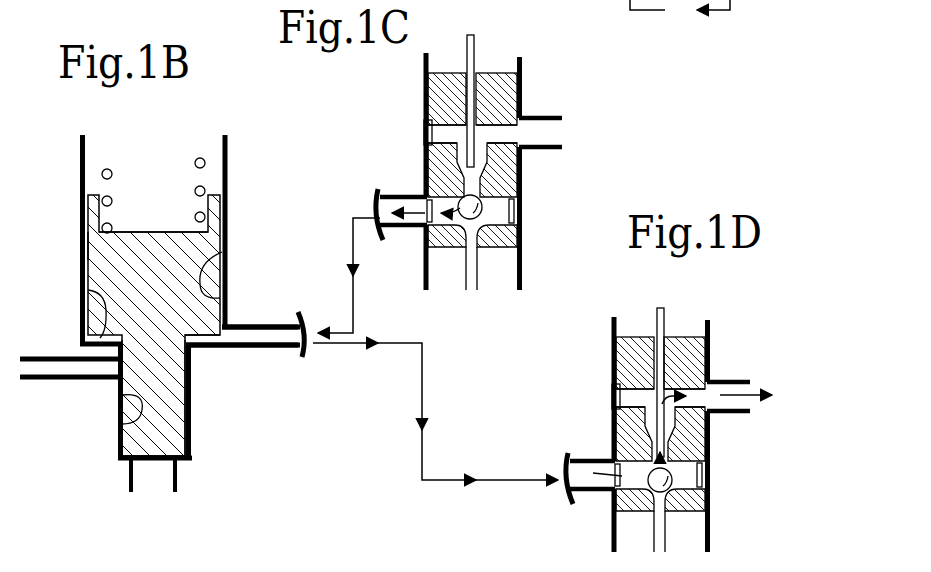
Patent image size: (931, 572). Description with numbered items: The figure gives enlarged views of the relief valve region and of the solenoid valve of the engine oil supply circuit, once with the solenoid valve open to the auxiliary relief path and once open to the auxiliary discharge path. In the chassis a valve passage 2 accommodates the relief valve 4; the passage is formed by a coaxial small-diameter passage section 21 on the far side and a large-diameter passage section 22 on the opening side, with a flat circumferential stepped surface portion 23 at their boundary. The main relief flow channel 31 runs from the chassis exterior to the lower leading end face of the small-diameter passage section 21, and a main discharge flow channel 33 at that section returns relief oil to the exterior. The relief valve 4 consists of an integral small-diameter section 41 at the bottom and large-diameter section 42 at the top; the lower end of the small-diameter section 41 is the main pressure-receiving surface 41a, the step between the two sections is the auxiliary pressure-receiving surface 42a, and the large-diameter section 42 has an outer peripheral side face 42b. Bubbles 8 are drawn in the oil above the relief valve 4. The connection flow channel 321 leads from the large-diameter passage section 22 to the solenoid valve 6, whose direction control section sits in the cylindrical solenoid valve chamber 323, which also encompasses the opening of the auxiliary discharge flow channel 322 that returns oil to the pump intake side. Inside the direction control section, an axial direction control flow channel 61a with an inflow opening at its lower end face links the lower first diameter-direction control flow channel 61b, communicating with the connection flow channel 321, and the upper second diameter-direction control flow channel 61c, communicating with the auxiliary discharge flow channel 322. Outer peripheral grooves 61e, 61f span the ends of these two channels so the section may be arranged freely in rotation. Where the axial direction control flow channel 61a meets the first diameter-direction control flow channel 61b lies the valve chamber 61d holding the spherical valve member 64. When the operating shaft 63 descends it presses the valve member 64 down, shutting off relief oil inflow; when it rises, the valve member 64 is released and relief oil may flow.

In FIG. 1B, the valve passage 2 is at (159, 157).
In FIG. 1B, the relief valve 4 is at (153, 226).
In FIG. 1B, the bubbles 8 is at (200, 157).
In FIG. 1B, the outer peripheral side face 42b is at (88, 248).
In FIG. 1B, the large-diameter section 42 is at (103, 266).
In FIG. 1B, the stepped surface portion 23 is at (90, 292).
In FIG. 1B, the large-diameter passage section 22 is at (222, 250).
In FIG. 1B, the main discharge flow channel 33 is at (65, 358).
In FIG. 1B, the connection flow channel 321 is at (258, 326).
In FIG. 1C, the connection flow channel 321 is at (405, 200).
In FIG. 1D, the connection flow channel 321 is at (583, 468).
In FIG. 1B, the auxiliary pressure-receiving surface 42a is at (212, 345).
In FIG. 1B, the small-diameter section 41 is at (163, 428).
In FIG. 1B, the small-diameter passage section 21 is at (118, 424).
In FIG. 1B, the main pressure-receiving surface 41a is at (128, 470).
In FIG. 1B, the main relief flow channel 31 is at (177, 480).
In FIG. 1C, the solenoid valve 6 is at (448, 65).
In FIG. 1D, the solenoid valve 6 is at (636, 330).
In FIG. 1C, the operating shaft 63 is at (476, 53).
In FIG. 1D, the operating shaft 63 is at (668, 317).
In FIG. 1C, the solenoid valve chamber 323 is at (505, 80).
In FIG. 1D, the solenoid valve chamber 323 is at (693, 348).
In FIG. 1C, the second diameter-direction control flow channel 61c is at (497, 137).
In FIG. 1D, the second diameter-direction control flow channel 61c is at (637, 397).
In FIG. 1C, the outer peripheral groove 61f is at (427, 138).
In FIG. 1D, the outer peripheral groove 61f is at (617, 402).
In FIG. 1C, the auxiliary discharge flow channel 322 is at (552, 136).
In FIG. 1D, the auxiliary discharge flow channel 322 is at (737, 388).
In FIG. 1C, the valve member 64 is at (473, 205).
In FIG. 1D, the valve member 64 is at (667, 477).
In FIG. 1C, the outer peripheral groove 61e is at (512, 201).
In FIG. 1D, the outer peripheral groove 61e is at (702, 465).
In FIG. 1C, the first diameter-direction control flow channel 61b is at (523, 213).
In FIG. 1D, the first diameter-direction control flow channel 61b is at (688, 477).
In FIG. 1C, the valve chamber 61d is at (492, 240).
In FIG. 1D, the valve chamber 61d is at (641, 482).
In FIG. 1C, the axial direction control flow channel 61a is at (475, 243).
In FIG. 1D, the axial direction control flow channel 61a is at (662, 505).